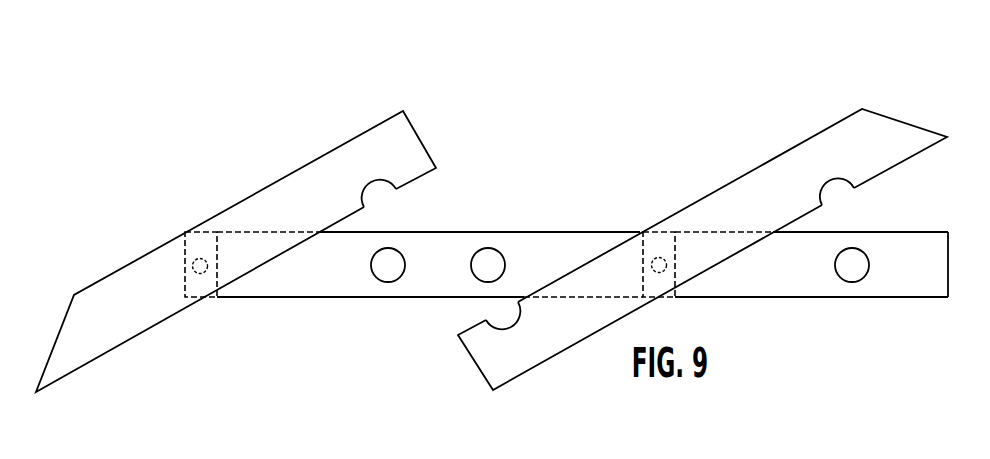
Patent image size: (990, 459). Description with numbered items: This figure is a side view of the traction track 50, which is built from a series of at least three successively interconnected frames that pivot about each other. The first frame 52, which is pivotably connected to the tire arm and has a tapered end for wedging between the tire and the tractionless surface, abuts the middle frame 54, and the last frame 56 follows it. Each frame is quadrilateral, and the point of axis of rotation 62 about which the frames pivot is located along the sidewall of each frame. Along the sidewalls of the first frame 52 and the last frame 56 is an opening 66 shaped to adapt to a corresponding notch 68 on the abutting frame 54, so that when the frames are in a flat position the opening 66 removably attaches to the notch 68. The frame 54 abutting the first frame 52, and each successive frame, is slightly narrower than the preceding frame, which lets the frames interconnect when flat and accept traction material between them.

The traction track 50 is at (806, 93).
The first frame 52 is at (277, 205).
The frame 54 is at (412, 232).
The last frame 56 is at (740, 177).
The point of axis of rotation 62 is at (197, 232).
The opening 66 is at (372, 184).
The notch 68 is at (482, 272).